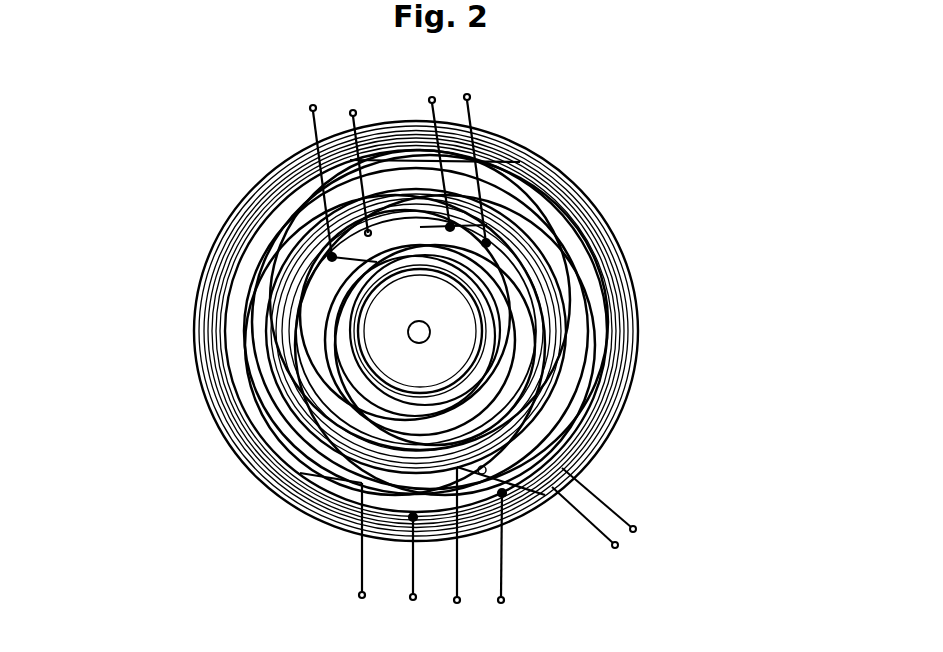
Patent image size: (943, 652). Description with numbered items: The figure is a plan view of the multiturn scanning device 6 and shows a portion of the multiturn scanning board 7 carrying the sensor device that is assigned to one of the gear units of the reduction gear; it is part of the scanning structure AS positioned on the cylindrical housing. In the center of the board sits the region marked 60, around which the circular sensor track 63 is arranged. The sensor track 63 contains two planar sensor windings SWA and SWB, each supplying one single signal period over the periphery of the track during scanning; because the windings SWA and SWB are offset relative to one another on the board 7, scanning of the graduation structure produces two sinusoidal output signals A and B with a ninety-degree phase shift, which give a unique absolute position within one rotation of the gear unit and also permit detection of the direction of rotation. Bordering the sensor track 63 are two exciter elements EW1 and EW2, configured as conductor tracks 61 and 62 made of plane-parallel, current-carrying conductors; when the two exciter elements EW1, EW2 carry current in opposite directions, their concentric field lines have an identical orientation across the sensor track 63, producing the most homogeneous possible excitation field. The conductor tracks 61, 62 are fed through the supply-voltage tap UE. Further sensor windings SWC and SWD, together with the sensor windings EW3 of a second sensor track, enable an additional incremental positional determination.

The multiturn scanning device 6 is at (416, 280).
The multiturn scanning board 7 is at (622, 244).
The rotor 60 is at (520, 350).
The conductor track 61 is at (273, 483).
The conductor track 62 is at (562, 410).
The sensor track 63 is at (245, 352).
The sensor winding SWA is at (332, 257).
The sensor winding SWB is at (325, 172).
The sensor winding SWC is at (295, 306).
The sensor winding SWD is at (487, 243).
The exciter element EW1 is at (573, 190).
The exciter element EW2 is at (545, 312).
The sensor winding EW3 is at (500, 300).
The output signal A is at (410, 354).
The output signal B is at (482, 347).
The supply-voltage tap UE is at (601, 518).
The scanning structure AS is at (182, 446).